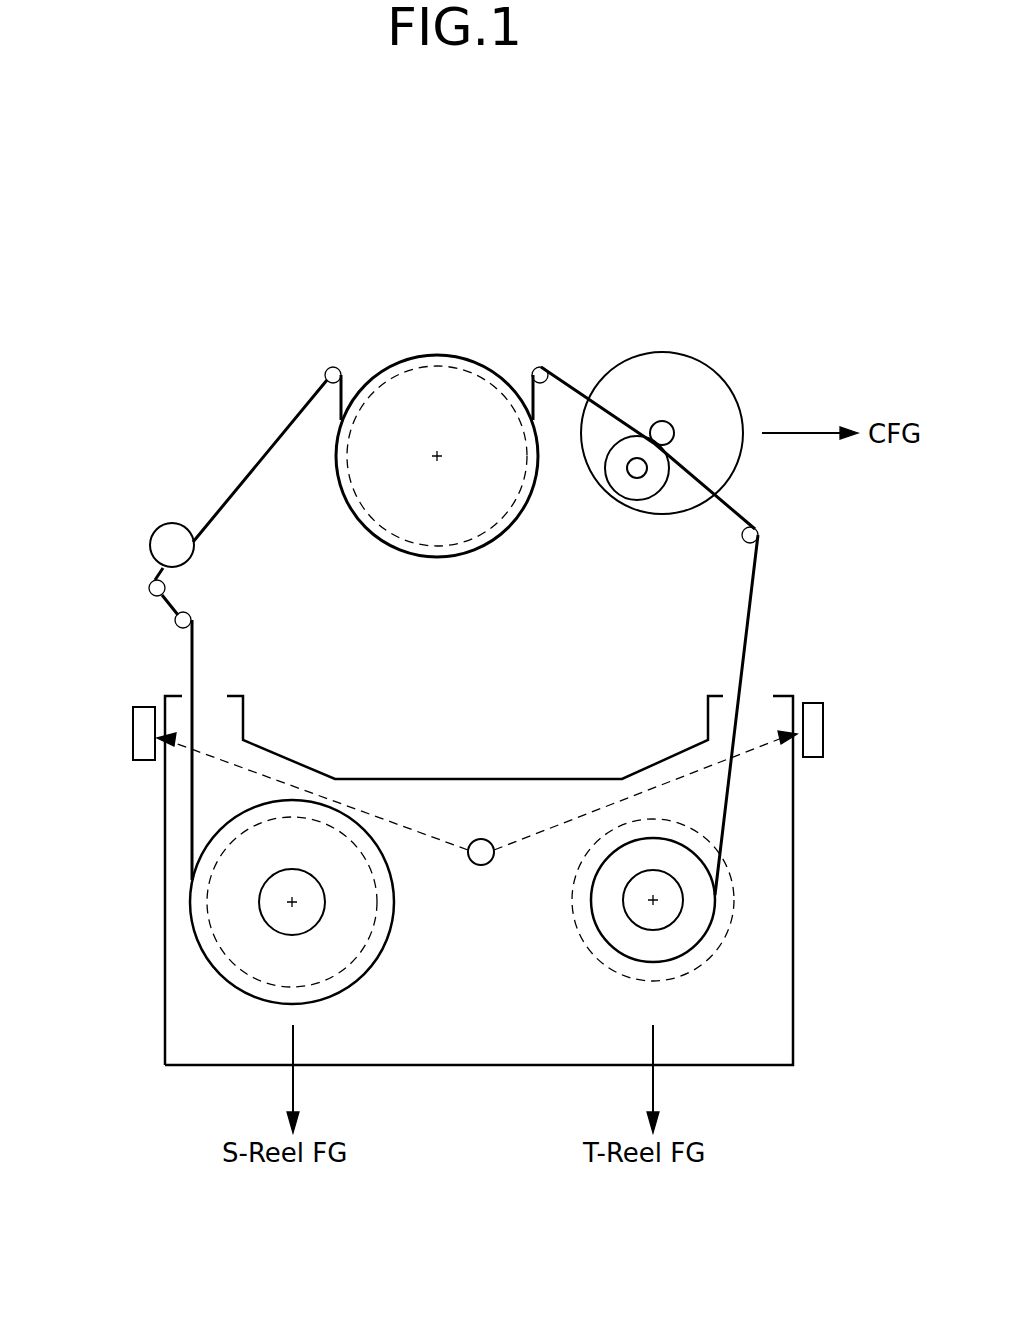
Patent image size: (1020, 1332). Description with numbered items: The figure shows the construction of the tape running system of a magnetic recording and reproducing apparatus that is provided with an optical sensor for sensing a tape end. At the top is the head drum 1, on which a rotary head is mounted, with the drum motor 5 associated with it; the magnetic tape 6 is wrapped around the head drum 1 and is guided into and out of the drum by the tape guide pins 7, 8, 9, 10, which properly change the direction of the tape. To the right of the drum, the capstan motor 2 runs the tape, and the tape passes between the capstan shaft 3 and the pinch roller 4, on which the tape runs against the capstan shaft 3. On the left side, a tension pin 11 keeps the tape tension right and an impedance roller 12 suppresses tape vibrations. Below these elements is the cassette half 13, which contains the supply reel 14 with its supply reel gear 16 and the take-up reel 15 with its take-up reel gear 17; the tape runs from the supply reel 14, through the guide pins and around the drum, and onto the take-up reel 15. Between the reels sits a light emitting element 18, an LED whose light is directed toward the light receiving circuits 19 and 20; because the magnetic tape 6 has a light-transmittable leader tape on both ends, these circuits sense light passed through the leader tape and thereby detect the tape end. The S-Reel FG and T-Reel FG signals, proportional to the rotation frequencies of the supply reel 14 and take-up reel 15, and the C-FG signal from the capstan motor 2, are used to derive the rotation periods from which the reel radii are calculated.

The head drum 1 is at (465, 355).
The capstan motor 2 is at (668, 353).
The capstan shaft 3 is at (674, 435).
The pinch roller 4 is at (612, 477).
The drum motor 5 is at (408, 370).
The magnetic tape 6 is at (282, 428).
The tape guide pin 7 is at (333, 367).
The tape guide pin 8 is at (538, 367).
The tape guide pin 9 is at (175, 618).
The tape guide pin 10 is at (758, 536).
The tension pin 11 is at (150, 583).
The impedance roller 12 is at (168, 523).
The cassette half 13 is at (182, 1067).
The supply reel 14 is at (393, 933).
The take-up reel 15 is at (593, 930).
The supply reel gear 16 is at (217, 943).
The take-up reel gear 17 is at (728, 927).
The light emitting element 18 is at (481, 865).
The light receiving circuit 19 is at (133, 733).
The light receiving circuit 20 is at (823, 733).